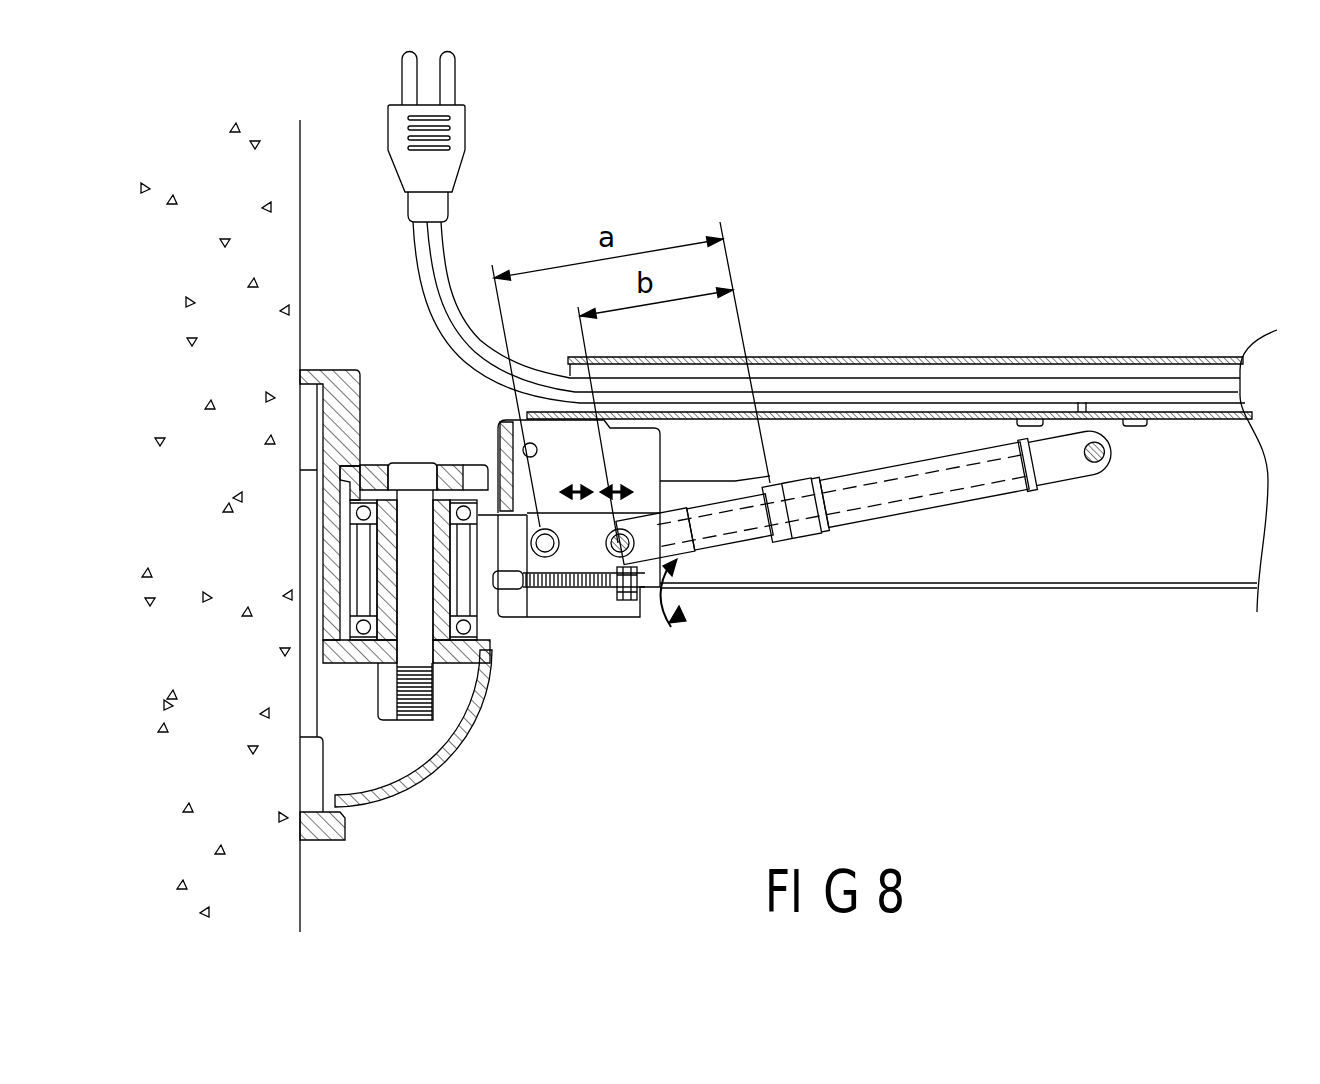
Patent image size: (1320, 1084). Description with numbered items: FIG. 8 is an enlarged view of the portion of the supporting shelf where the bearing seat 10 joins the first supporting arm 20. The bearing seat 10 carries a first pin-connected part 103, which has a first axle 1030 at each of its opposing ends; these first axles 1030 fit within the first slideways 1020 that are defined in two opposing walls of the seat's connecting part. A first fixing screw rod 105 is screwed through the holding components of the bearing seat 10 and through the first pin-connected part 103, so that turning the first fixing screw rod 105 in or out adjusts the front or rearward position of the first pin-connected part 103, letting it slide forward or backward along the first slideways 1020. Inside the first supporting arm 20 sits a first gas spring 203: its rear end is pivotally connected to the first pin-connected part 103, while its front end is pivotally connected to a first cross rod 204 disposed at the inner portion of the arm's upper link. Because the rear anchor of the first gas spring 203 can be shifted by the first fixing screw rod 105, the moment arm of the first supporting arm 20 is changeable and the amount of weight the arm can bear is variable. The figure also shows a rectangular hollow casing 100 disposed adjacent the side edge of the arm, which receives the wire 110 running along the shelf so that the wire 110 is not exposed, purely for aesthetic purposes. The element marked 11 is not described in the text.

The bearing seat 10 is at (370, 758).
The motor shaft 11 is at (415, 463).
The first supporting arm 20 is at (1023, 563).
The casing 100 is at (957, 357).
The wire 110 is at (812, 357).
The first gas spring 203 is at (860, 514).
The first cross rod 204 is at (1100, 432).
The first slideway 1020 is at (541, 557).
The first axle 1030 is at (593, 568).
The first pin-connected part 103 is at (608, 548).
The first fixing screw rod 105 is at (626, 600).